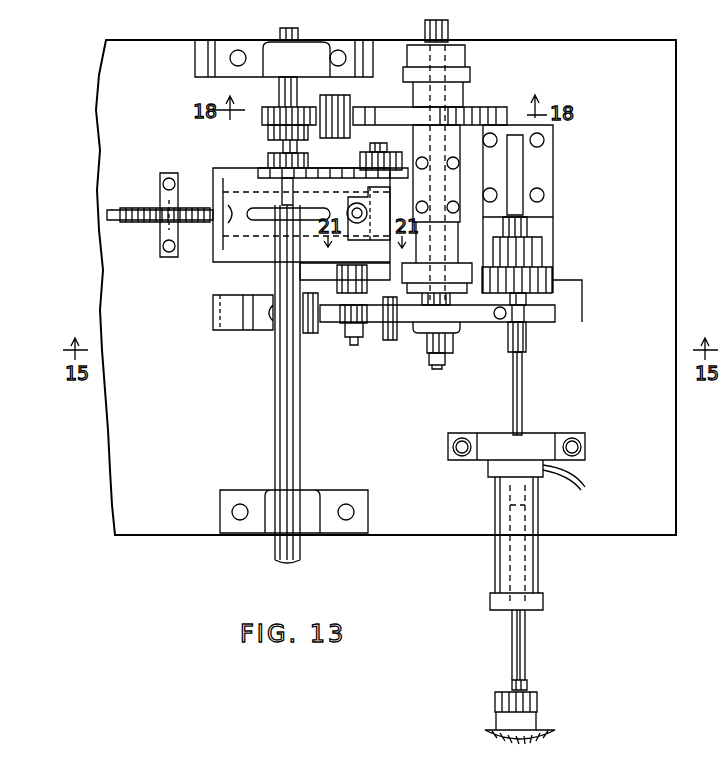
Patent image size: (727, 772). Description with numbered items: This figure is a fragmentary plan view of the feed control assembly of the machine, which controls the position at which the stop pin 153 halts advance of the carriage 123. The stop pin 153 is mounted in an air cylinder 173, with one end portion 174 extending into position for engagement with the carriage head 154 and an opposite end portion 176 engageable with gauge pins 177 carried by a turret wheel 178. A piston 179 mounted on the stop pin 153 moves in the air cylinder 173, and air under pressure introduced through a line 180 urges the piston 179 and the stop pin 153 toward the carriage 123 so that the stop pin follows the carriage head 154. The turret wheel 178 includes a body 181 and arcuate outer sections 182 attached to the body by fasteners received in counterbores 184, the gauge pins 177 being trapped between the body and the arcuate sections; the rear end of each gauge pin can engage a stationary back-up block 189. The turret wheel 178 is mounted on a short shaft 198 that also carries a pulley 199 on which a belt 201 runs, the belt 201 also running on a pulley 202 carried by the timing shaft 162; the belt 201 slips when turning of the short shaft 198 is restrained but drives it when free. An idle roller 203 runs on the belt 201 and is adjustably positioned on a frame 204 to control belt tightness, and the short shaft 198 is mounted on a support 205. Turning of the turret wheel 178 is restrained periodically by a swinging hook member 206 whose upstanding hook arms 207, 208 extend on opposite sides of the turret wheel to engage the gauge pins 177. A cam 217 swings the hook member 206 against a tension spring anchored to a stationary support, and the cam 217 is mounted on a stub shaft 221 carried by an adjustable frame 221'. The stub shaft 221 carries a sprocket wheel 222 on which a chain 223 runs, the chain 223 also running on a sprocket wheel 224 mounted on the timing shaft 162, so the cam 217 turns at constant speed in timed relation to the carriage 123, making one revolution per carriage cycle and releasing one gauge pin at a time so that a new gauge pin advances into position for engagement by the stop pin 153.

The carriage 123 is at (523, 740).
The stop pin 153 is at (536, 640).
The carriage head 154 is at (527, 687).
The timing shaft 162 is at (302, 555).
The air cylinder 173 is at (527, 548).
The end portion of the stop pin 174 is at (525, 672).
The opposite end portion of the stop pin 176 is at (522, 385).
The gauge pins 177 is at (397, 332).
The turret wheel 178 is at (545, 311).
The piston 179 is at (540, 505).
The line 180 is at (585, 487).
The body 181 is at (435, 771).
The arcuate outer sections 182 is at (385, 755).
The counterbores 184 is at (460, 314).
The stationary back-up block 189 is at (555, 270).
The short shaft 198 is at (440, 367).
The pulley 199 is at (483, 108).
The belt 201 is at (536, 145).
The pulley 202 is at (272, 107).
The idle roller 203 is at (348, 110).
The frame 204 is at (360, 97).
The support 205 is at (462, 102).
The swinging hook member 206 is at (307, 333).
The hook arm 207 is at (343, 325).
The hook arm 208 is at (340, 292).
The cam 217 is at (367, 264).
The stub shaft 221 is at (360, 182).
The adjustable frame 221' is at (248, 229).
The sprocket wheel 222 is at (365, 166).
The chain 223 is at (269, 136).
The sprocket wheel 224 is at (265, 166).